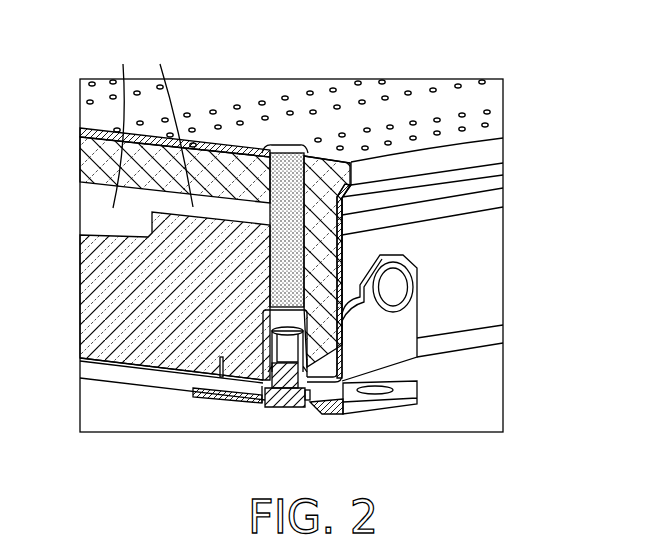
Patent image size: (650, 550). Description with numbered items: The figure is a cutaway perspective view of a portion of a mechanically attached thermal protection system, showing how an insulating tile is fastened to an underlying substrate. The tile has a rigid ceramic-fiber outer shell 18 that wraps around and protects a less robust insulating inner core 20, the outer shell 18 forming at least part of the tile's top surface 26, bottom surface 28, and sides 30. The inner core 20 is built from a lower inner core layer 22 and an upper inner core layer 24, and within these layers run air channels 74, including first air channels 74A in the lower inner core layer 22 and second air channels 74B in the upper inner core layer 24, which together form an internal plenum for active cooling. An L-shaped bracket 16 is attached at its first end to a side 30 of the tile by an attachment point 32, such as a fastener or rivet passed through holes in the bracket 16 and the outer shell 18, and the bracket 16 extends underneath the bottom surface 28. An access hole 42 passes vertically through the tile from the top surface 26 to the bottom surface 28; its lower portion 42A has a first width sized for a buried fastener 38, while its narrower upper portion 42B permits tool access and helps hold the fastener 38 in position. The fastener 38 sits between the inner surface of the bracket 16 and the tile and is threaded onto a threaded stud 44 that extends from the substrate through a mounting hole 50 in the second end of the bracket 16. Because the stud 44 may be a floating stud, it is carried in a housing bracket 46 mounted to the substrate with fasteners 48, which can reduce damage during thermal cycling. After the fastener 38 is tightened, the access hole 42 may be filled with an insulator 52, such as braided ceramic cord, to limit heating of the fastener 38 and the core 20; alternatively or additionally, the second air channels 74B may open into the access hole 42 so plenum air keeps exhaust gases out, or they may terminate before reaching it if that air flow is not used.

The bracket 16 is at (405, 360).
The outer shell 18 is at (342, 250).
The inner core 20 is at (76, 140).
The lower inner core layer 22 is at (137, 316).
The upper inner core layer 24 is at (159, 177).
The top surface 26 is at (228, 96).
The bottom surface 28 is at (125, 368).
The side 30 is at (476, 244).
The attachment point 32 is at (395, 288).
The fastener 38 is at (280, 345).
The access hole 42 is at (287, 145).
The lower portion of the access hole 42A is at (263, 322).
The upper portion of the access hole 42B is at (270, 252).
The threaded stud 44 is at (265, 385).
The housing bracket 46 is at (380, 404).
The fastener 48 is at (378, 390).
The mounting hole 50 is at (282, 390).
The insulator 52 is at (307, 183).
The air channels 74 is at (182, 38).
The first air channels 74A is at (122, 123).
The second air channels 74B is at (170, 123).